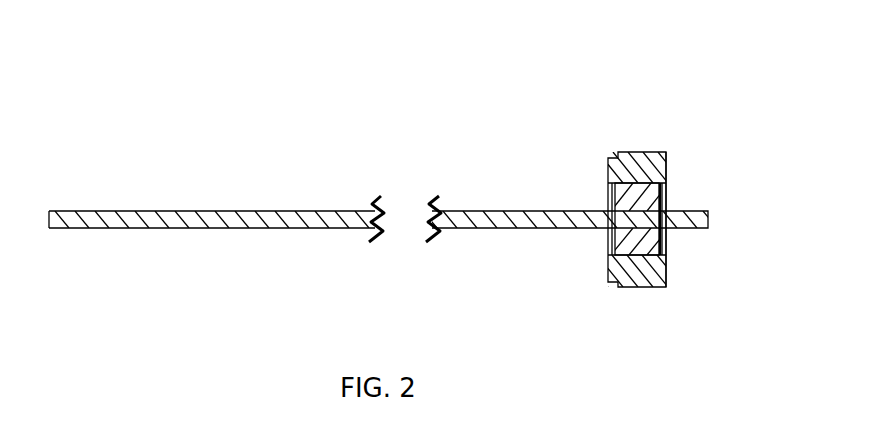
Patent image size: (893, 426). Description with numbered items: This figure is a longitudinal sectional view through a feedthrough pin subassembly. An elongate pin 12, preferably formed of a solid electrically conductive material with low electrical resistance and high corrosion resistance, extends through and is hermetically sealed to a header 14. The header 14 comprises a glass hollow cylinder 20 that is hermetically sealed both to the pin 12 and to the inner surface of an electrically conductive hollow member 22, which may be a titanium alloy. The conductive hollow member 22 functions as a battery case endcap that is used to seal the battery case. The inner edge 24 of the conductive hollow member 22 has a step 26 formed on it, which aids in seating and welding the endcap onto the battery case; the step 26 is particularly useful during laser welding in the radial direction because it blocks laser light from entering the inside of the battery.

The elongate pin 12 is at (246, 224).
The header 14 is at (662, 136).
The glass hollow cylinder 20 is at (665, 240).
The electrically conductive hollow member 22 is at (667, 151).
The inner edge 24 is at (610, 157).
The step 26 is at (618, 153).